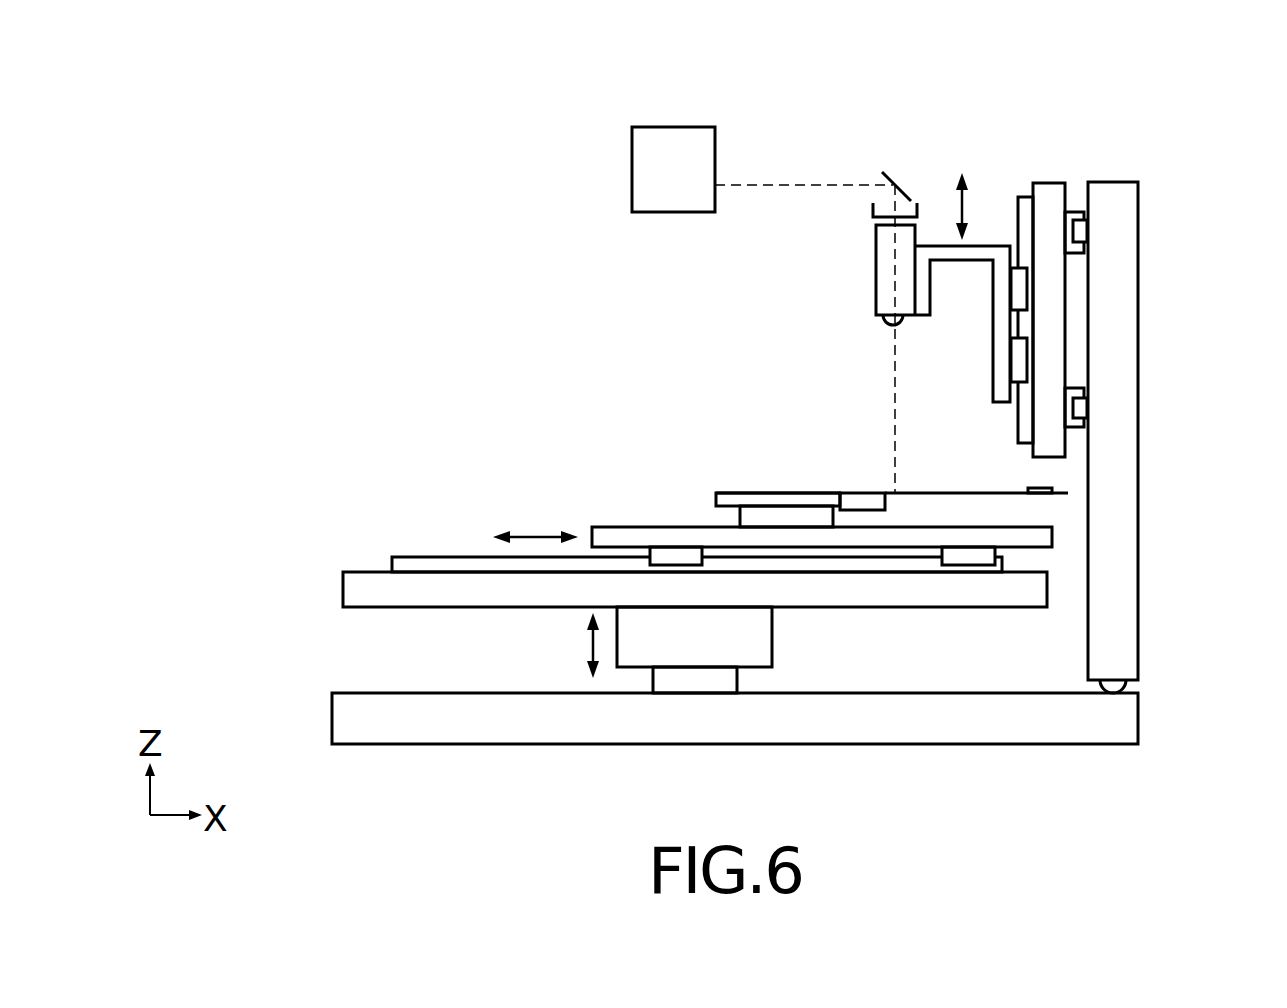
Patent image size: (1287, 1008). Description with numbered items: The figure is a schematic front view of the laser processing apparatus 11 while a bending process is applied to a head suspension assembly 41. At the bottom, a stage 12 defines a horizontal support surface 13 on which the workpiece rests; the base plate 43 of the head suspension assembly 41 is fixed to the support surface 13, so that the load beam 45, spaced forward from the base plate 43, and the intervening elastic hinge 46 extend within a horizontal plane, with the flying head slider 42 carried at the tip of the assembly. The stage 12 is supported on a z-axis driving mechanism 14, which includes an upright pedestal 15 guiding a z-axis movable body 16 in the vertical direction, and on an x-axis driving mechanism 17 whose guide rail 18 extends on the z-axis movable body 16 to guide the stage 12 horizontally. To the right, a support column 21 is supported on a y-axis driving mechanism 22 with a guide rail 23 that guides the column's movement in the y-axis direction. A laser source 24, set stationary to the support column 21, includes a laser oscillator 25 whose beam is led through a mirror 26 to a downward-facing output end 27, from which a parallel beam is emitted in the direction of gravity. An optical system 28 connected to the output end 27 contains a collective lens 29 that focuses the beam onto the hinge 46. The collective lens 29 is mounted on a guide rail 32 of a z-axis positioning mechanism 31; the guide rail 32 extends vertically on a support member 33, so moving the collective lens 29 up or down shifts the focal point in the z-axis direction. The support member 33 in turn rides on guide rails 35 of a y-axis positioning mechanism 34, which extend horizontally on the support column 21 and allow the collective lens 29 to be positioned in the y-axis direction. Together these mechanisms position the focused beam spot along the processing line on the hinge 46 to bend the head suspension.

The laser processing apparatus 11 is at (473, 146).
The stage 12 is at (822, 509).
The support surface 13 is at (752, 500).
The z-axis driving mechanism 14 is at (665, 650).
The pedestal 15 is at (737, 682).
The z-axis movable body 16 is at (772, 618).
The x-axis driving mechanism 17 is at (688, 522).
The guide rail 18 is at (392, 560).
The support column 21 is at (1138, 340).
The y-axis driving mechanism 22 is at (1180, 616).
The guide rail 23 is at (1128, 686).
The laser source 24 is at (821, 259).
The laser oscillator 25 is at (648, 127).
The mirror 26 is at (886, 171).
The output end 27 is at (893, 217).
The optical system 28 is at (839, 310).
The collective lens 29 is at (887, 320).
The z-axis positioning mechanism 31 is at (988, 294).
The guide rail 32 is at (1018, 427).
The support member 33 is at (1065, 285).
The y-axis positioning mechanism 34 is at (1123, 269).
The guide rails 35 is at (1084, 230).
The head suspension assembly 41 is at (937, 445).
The flying head slider 42 is at (1052, 490).
The base plate 43 is at (767, 493).
The load beam 45 is at (951, 493).
The hinge 46 is at (893, 493).